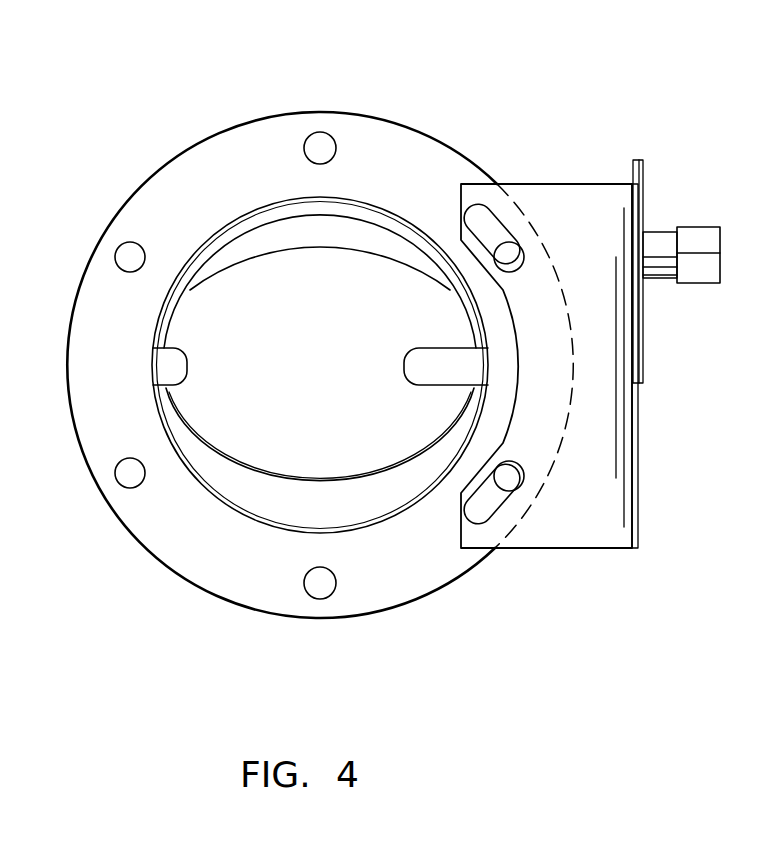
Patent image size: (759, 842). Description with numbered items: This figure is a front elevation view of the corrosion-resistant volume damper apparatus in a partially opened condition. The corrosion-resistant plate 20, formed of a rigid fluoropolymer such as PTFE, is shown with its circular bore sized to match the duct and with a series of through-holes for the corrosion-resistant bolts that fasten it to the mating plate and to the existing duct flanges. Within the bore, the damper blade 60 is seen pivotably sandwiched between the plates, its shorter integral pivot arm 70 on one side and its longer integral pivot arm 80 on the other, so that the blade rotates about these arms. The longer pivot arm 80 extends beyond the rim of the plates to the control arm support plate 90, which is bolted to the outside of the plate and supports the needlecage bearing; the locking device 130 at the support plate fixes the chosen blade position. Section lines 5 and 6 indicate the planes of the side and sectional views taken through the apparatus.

The corrosion-resistant plate 20 is at (402, 145).
The damper blade 60 is at (287, 478).
The shorter integral pivot arm 70 is at (186, 356).
The longer integral pivot arm 80 is at (430, 372).
The control arm support plate 90 is at (556, 184).
The locking device 130 is at (688, 227).
The section line 5- 5 is at (93, 125).
The section line 6- 6 is at (320, 148).